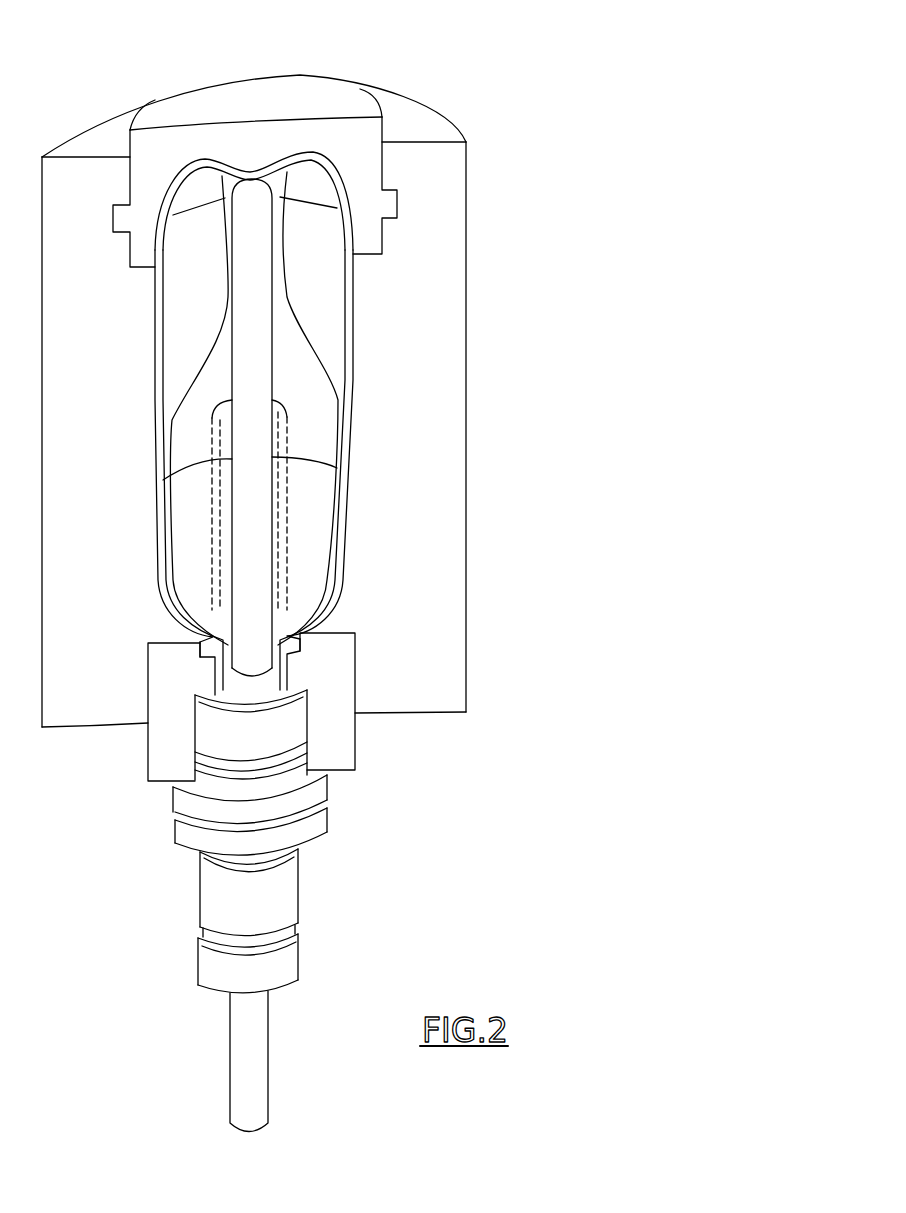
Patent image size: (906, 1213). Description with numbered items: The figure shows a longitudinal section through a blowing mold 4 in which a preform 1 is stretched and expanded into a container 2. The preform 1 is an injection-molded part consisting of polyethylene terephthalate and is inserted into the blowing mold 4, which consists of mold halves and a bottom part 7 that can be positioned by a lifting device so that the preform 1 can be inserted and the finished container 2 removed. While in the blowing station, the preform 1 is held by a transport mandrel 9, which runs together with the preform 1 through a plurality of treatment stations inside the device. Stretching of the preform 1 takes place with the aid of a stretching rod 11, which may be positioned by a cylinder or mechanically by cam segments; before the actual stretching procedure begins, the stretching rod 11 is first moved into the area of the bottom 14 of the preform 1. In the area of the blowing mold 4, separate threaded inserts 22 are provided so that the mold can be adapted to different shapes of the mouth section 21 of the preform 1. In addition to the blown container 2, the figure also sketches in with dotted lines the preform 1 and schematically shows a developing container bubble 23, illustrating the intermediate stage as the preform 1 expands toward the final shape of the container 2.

The preform 1 is at (283, 540).
The container 2 is at (350, 345).
The blowing mold 4 is at (428, 402).
The bottom part 7 is at (330, 93).
The transport mandrel 9 is at (315, 833).
The stretching rod 11 is at (230, 1075).
The bottom 14 is at (272, 400).
The mouth section 21 is at (287, 660).
The threaded inserts 22 is at (340, 737).
The container bubble 23 is at (297, 312).